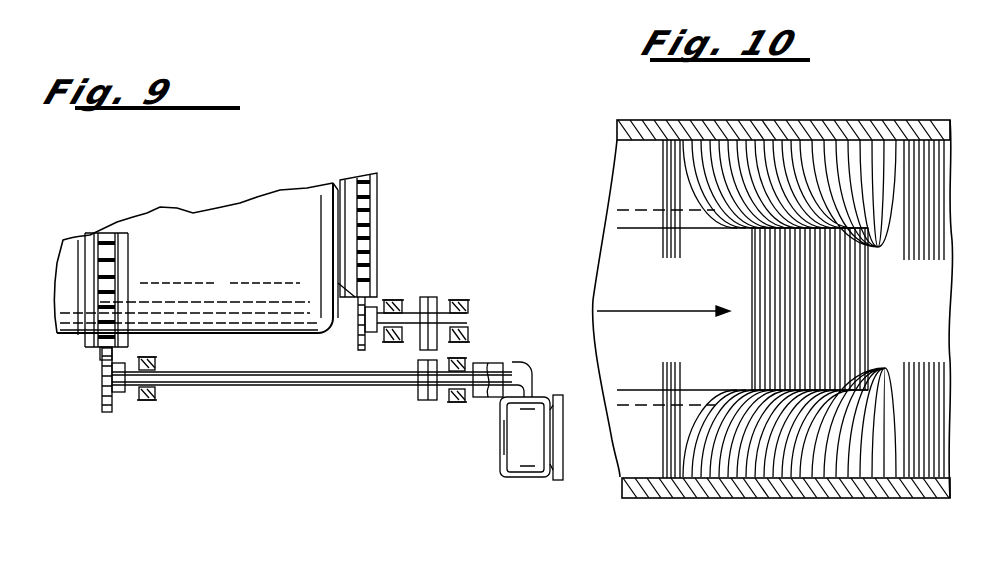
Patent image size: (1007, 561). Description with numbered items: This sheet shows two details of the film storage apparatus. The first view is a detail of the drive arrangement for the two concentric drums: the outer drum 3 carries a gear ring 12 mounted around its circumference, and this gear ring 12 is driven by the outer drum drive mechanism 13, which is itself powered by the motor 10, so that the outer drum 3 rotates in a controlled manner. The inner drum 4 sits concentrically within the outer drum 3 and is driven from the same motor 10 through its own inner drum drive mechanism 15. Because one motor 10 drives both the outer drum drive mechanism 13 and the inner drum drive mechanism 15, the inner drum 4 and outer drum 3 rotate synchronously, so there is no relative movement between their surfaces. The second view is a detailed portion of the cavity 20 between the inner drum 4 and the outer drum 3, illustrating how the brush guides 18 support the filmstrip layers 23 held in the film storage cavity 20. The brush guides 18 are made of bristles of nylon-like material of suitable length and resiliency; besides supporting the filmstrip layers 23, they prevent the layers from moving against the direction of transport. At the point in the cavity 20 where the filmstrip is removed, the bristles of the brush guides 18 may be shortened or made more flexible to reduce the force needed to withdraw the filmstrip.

In FIG. 9, the outer drum 3 is at (257, 216).
In FIG. 10, the outer drum 3 is at (706, 132).
In FIG. 9, the inner drum 4 is at (345, 200).
In FIG. 10, the inner drum 4 is at (790, 491).
In FIG. 9, the motor 10 is at (511, 453).
In FIG. 9, the gear ring 12 is at (102, 323).
In FIG. 9, the outer drum drive mechanism 13 is at (253, 400).
In FIG. 9, the inner drum drive mechanism 15 is at (430, 286).
In FIG. 10, the brush guides 18 is at (662, 178).
In FIG. 9, the film storage cavity 20 is at (343, 320).
In FIG. 10, the film storage cavity 20 is at (642, 262).
In FIG. 10, the filmstrip layers 23 is at (870, 316).